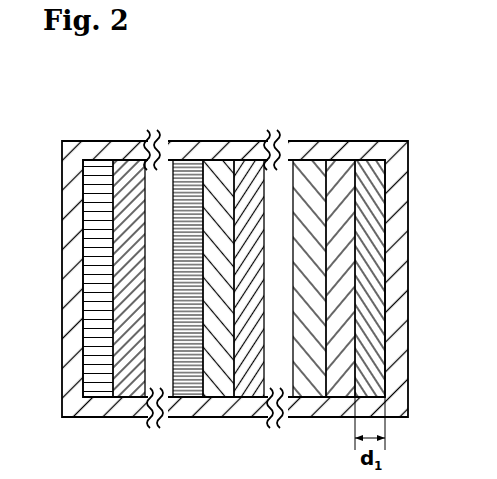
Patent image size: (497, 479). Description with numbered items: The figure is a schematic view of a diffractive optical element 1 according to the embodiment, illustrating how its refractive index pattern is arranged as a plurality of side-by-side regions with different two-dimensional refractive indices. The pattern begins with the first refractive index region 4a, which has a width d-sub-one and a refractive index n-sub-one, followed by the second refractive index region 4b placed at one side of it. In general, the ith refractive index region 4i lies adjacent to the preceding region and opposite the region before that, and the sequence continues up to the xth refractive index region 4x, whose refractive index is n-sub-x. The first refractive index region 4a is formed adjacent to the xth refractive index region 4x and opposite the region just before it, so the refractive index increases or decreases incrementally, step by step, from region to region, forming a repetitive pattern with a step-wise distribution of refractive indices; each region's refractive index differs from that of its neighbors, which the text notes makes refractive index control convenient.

The diffractive optical element 1 is at (254, 134).
The xth refractive index region 4x is at (92, 197).
The ith refractive index region 4i is at (212, 202).
The second refractive index region 4b is at (336, 197).
The first refractive index region 4a is at (377, 200).